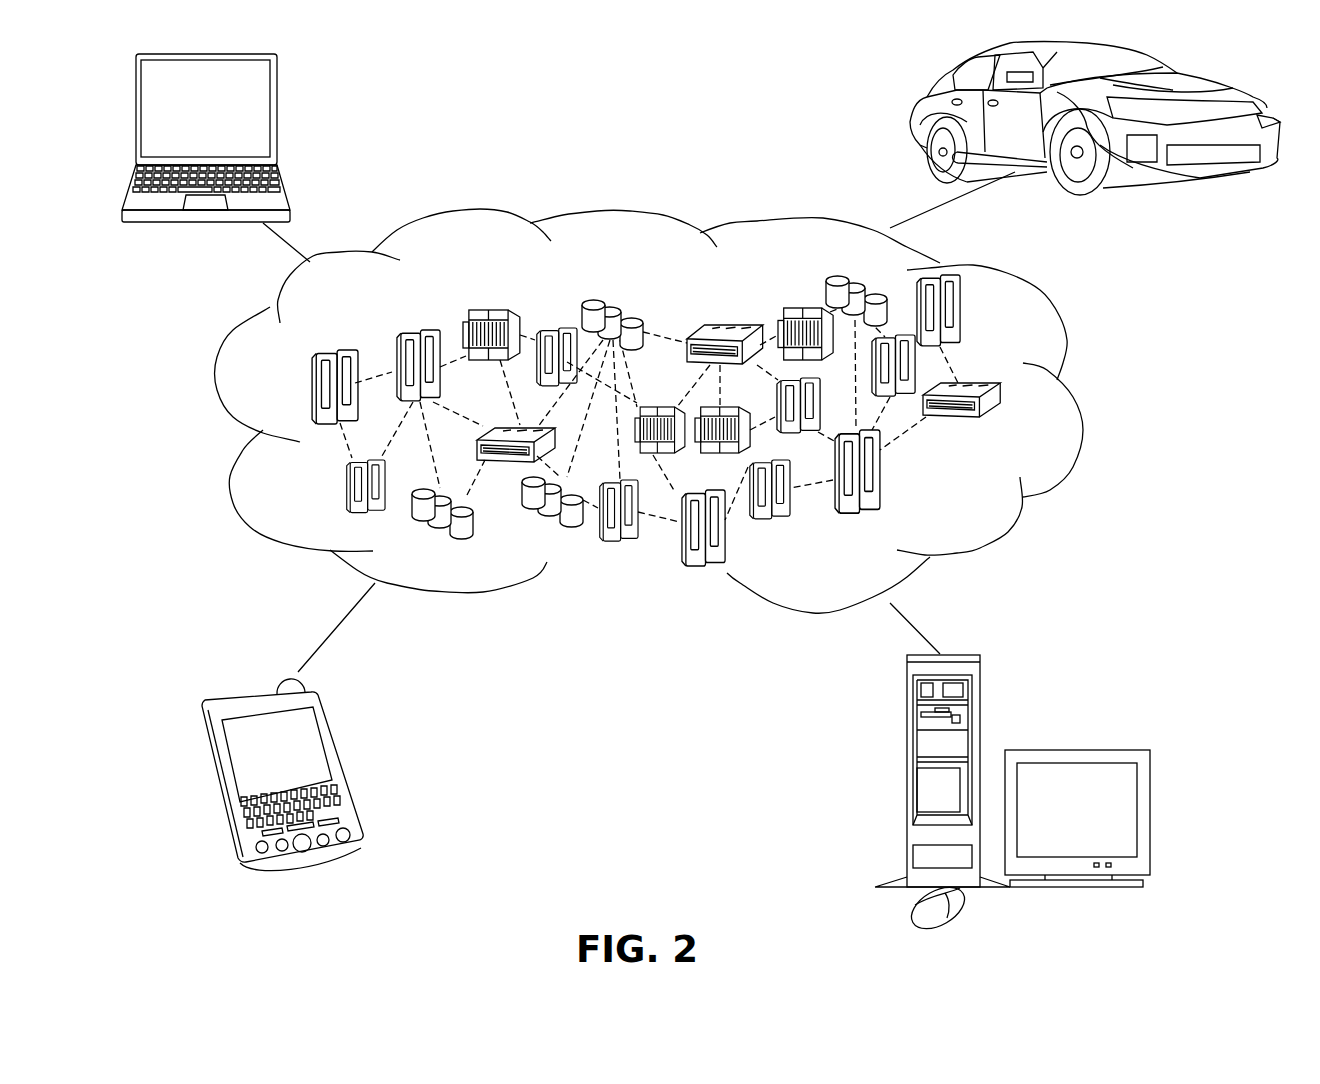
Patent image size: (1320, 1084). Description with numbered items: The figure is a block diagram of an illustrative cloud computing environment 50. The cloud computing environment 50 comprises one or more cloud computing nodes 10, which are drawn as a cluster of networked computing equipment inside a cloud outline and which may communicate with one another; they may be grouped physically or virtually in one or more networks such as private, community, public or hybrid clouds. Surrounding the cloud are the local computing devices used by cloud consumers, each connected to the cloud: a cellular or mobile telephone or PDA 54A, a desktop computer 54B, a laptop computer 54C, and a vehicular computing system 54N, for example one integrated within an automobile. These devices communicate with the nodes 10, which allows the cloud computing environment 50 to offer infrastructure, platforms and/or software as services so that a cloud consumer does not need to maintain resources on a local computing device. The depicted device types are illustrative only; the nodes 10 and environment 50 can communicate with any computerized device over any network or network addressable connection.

The cloud computing node 10 is at (981, 502).
The cloud computing environment 50 is at (1073, 402).
The cellular telephone or PDA 54A is at (330, 732).
The desktop computer 54B is at (905, 716).
The laptop computer 54C is at (277, 93).
The vehicular computing system 54N is at (920, 112).